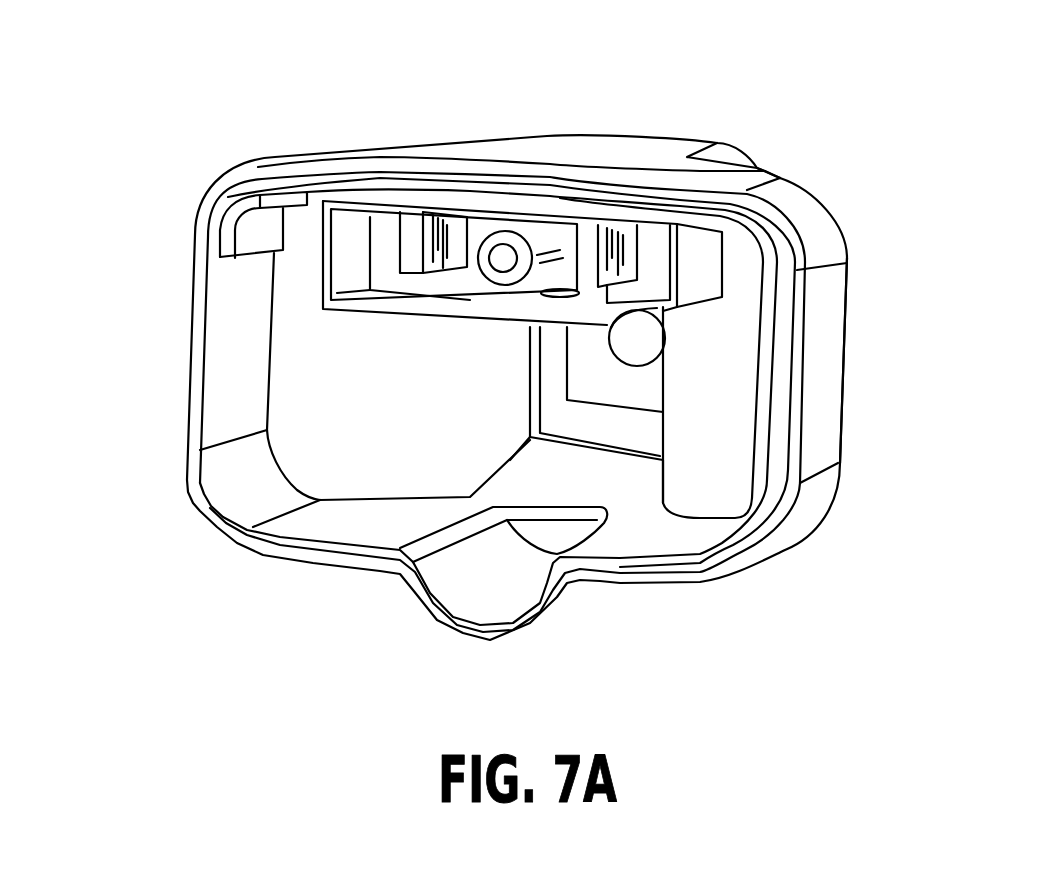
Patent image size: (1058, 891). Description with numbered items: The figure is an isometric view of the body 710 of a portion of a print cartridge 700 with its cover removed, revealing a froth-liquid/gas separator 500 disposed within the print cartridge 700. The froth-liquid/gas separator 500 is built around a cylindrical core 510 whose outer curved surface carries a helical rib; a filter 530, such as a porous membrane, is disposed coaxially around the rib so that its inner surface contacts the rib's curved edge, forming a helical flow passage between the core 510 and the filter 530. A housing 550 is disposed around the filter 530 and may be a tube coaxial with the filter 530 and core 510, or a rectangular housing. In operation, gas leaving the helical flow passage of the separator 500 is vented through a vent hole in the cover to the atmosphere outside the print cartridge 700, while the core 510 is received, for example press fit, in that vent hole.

The print cartridge 700 is at (808, 90).
The body 710 is at (832, 379).
The froth-liquid/gas separator 500 is at (363, 318).
The cylindrical core 510 is at (503, 237).
The filter 530 is at (555, 237).
The housing 550 is at (322, 238).